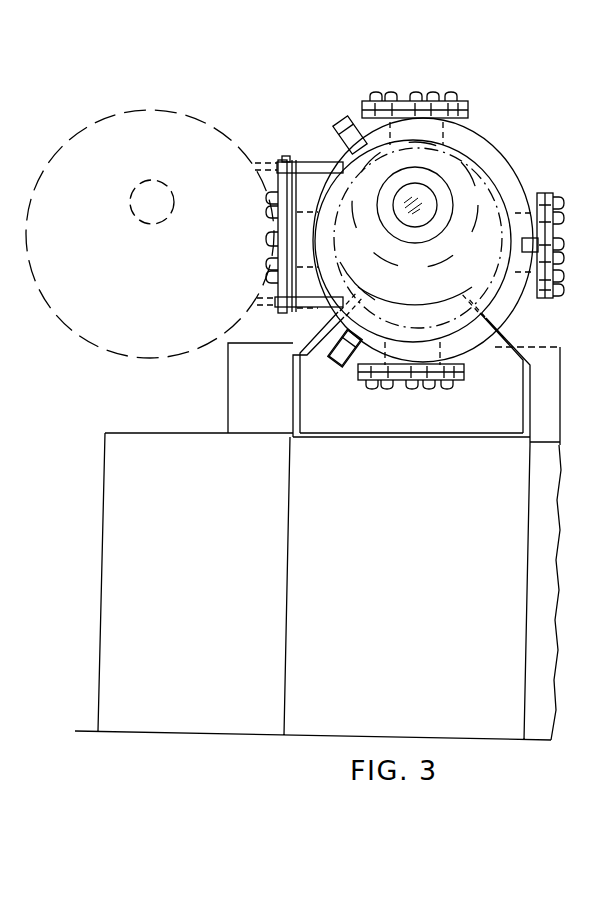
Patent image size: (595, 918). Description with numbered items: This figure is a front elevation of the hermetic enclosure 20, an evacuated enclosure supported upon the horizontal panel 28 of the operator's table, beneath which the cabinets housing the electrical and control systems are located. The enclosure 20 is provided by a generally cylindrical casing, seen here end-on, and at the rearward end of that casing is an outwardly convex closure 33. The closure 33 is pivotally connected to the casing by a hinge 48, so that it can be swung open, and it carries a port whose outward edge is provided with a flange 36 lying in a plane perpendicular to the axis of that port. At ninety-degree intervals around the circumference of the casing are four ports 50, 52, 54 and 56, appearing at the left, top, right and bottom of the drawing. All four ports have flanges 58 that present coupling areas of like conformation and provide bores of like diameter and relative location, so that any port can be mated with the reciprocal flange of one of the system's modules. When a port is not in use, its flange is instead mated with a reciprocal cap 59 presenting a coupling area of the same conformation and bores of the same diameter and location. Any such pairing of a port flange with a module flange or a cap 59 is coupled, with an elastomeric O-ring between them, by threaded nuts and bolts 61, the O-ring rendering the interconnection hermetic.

The hermetic enclosure 20 is at (321, 137).
The horizontal panel 28 is at (361, 440).
The outwardly convex closure 33 is at (426, 297).
The flange 36 is at (464, 372).
The hinge 48 is at (277, 228).
The port 50 is at (256, 257).
The port 52 is at (437, 88).
The port 54 is at (556, 189).
The port 56 is at (399, 394).
The flanges 58 is at (277, 179).
The reciprocal caps 59 is at (358, 373).
The threaded nuts and bolts 61 is at (390, 85).